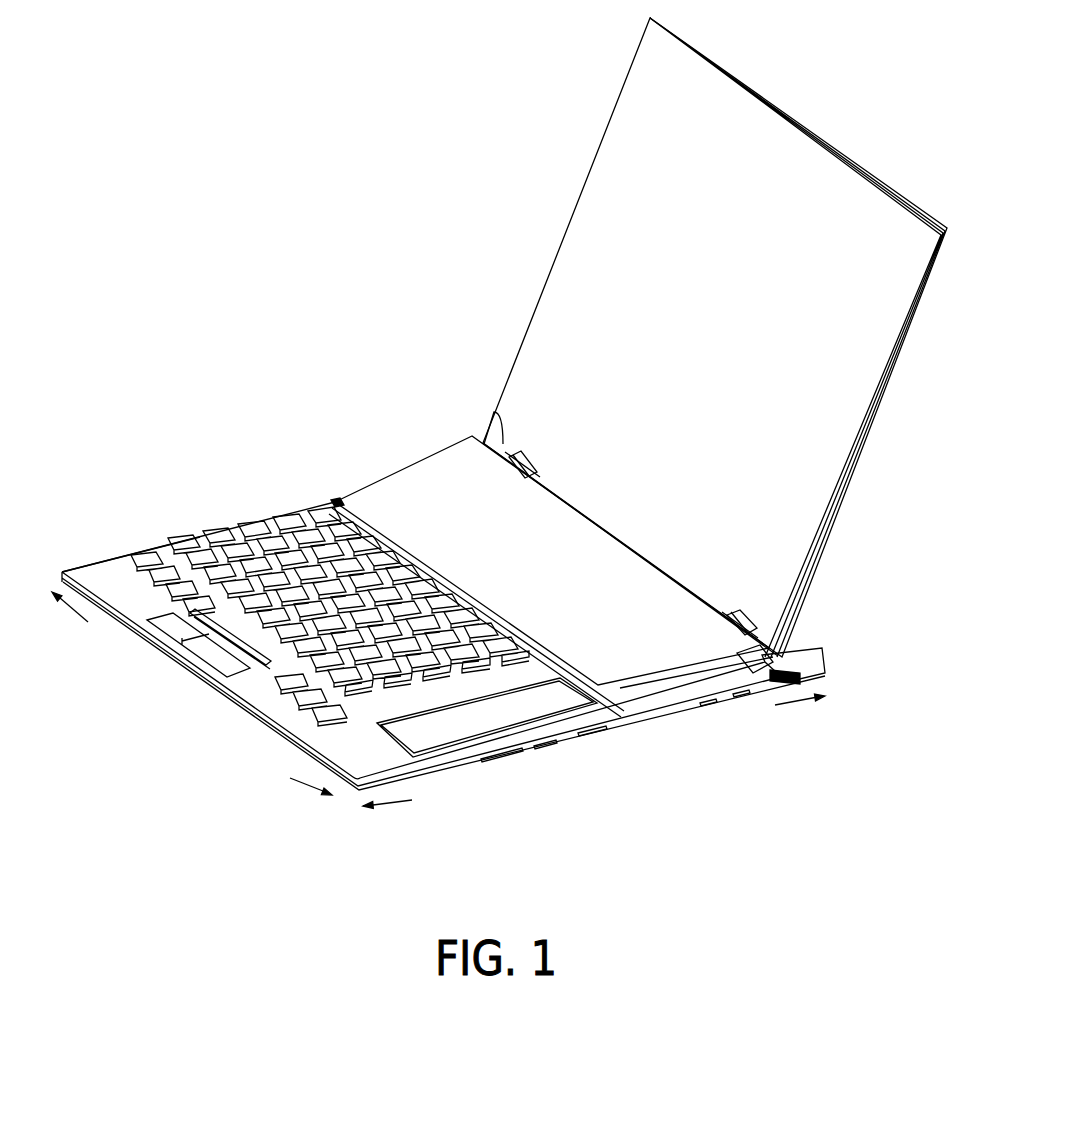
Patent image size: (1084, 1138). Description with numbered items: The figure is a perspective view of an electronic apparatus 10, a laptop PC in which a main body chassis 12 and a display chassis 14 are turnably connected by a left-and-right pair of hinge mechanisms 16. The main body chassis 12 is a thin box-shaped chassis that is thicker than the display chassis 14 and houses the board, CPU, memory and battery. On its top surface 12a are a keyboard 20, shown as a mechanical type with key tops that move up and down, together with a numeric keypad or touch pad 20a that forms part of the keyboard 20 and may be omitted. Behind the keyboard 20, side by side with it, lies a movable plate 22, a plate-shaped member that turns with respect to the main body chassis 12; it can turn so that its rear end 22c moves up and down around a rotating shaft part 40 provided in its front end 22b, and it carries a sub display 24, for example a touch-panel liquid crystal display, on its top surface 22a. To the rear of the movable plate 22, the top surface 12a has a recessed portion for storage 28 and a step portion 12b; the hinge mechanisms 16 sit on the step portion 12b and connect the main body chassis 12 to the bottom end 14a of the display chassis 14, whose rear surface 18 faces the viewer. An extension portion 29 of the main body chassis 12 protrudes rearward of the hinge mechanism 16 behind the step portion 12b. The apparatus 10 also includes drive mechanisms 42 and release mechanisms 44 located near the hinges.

The electronic apparatus 10 is at (254, 141).
The main body chassis 12 is at (474, 676).
The top surface 12a is at (103, 573).
The step portion 12b is at (725, 683).
The display chassis 14 is at (715, 337).
The bottom end 14a is at (760, 684).
The hinge mechanism 16 is at (520, 453).
The rear surface of display 18 is at (592, 210).
The keyboard 20 is at (262, 581).
The numeric keypad (touch pad) 20a is at (508, 725).
The movable plate 22 is at (539, 554).
The top surface 22a is at (610, 560).
The front end 22b is at (325, 510).
The rear end 22c is at (500, 410).
The sub display 24 is at (630, 549).
The recessed portion for storage 28 is at (687, 688).
The extension portion 29 is at (800, 648).
The rotating shaft part 40 is at (426, 490).
The drive mechanism 42 is at (695, 536).
The release mechanism 44 is at (535, 470).